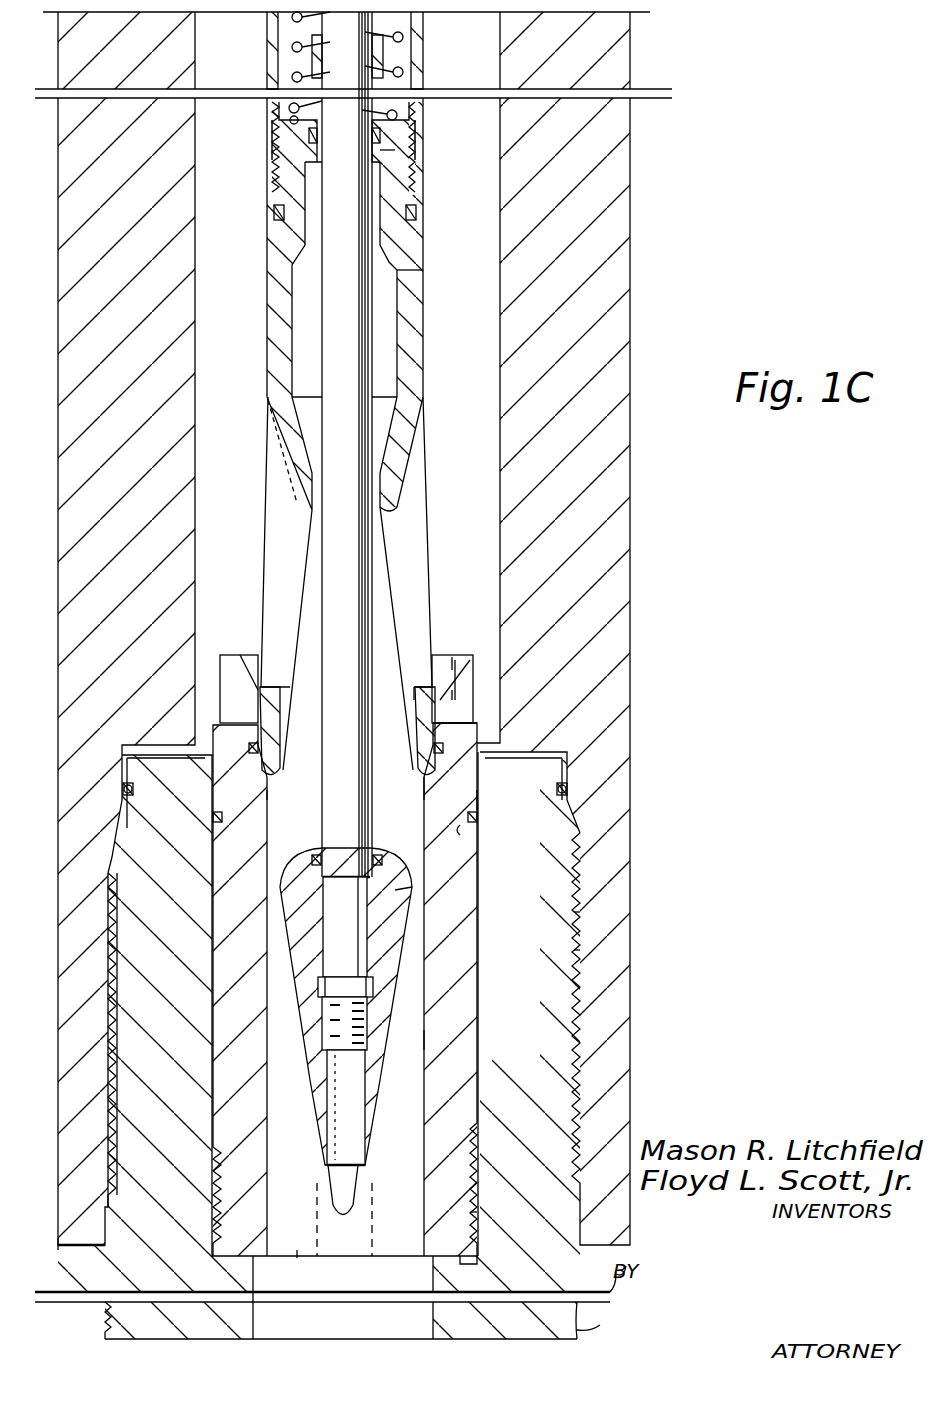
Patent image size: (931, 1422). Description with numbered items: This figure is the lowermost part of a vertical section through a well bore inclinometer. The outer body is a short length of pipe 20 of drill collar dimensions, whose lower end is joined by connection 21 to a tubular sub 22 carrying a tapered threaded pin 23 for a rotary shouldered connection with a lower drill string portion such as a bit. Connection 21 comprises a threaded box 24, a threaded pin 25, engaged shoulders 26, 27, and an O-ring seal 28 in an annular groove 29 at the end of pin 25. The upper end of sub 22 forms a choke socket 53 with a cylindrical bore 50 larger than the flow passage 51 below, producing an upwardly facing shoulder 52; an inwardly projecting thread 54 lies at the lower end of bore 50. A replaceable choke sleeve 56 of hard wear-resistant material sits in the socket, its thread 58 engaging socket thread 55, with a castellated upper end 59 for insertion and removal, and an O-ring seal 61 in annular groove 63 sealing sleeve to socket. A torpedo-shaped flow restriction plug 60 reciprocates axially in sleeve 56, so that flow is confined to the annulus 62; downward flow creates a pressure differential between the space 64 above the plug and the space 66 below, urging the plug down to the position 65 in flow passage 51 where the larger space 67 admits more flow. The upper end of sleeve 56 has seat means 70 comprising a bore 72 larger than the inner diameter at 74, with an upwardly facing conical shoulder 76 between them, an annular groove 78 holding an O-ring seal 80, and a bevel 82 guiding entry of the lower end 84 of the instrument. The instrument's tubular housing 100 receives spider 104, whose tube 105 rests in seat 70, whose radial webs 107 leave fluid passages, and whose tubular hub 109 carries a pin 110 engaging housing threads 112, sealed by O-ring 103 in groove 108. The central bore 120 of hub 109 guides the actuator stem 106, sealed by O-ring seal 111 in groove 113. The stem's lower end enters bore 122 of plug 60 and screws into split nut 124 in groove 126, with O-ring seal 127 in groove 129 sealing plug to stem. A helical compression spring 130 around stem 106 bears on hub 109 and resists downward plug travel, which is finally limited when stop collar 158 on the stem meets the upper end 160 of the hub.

The pipe 20 is at (605, 133).
The connection 21 is at (580, 1000).
The tubular sub 22 is at (70, 1292).
The tapered threaded pin 23 is at (605, 1330).
The threaded box 24 is at (580, 955).
The threaded pin 25 is at (580, 915).
The engaged shoulder 26 is at (58, 1250).
The engaged shoulder 27 is at (105, 1240).
The O-ring seal 28 is at (568, 786).
The annular groove 29 is at (565, 773).
The cylindrical bore 50 is at (590, 1098).
The flow passage 51 is at (300, 1270).
The upwardly facing shoulder 52 is at (455, 1265).
The choke socket 53 is at (205, 768).
The inwardly projecting thread 54 is at (472, 1180).
The socket thread 55 is at (470, 1212).
The choke sleeve 56 is at (470, 1078).
The sleeve thread 58 is at (468, 1185).
The castellation 59 is at (460, 662).
The flow restriction plug 60 is at (390, 935).
The O-ring seal 61 is at (473, 818).
The annulus 62 is at (420, 893).
The annular groove 63 is at (462, 830).
The space above plug 64 is at (309, 804).
The plug position in flow passage 65 is at (297, 1255).
The space below plug 66 is at (400, 1168).
The fluid flow space 67 is at (410, 1302).
The seat means 70 is at (440, 770).
The bore 72 is at (472, 720).
The sleeve inner diameter 74 is at (420, 1040).
The conical shoulder 76 is at (482, 800).
The annular groove 78 is at (258, 733).
The O-ring seal 80 is at (258, 748).
The bevel 82 is at (445, 655).
The lower end of instrument 84 is at (426, 335).
The tubular housing 100 is at (262, 160).
The O-ring 103 is at (415, 212).
The spider 104 is at (265, 250).
The tube 105 is at (425, 705).
The actuator stem 106 is at (360, 370).
The radial web 107 is at (410, 510).
The annular groove 108 is at (395, 228).
The tubular hub 109 is at (410, 290).
The pin 110 is at (400, 188).
The O-ring seal 111 is at (395, 150).
The threads 112 is at (268, 142).
The annular groove 113 is at (382, 133).
The central bore 120 is at (420, 168).
The bore in plug 122 is at (355, 1080).
The split nut 124 is at (372, 985).
The groove 126 is at (370, 1003).
The O-ring seal 127 is at (378, 856).
The groove 129 is at (318, 858).
The helical compression spring 130 is at (405, 38).
The stop collar 158 is at (402, 60).
The upper end of spider hub 160 is at (395, 108).